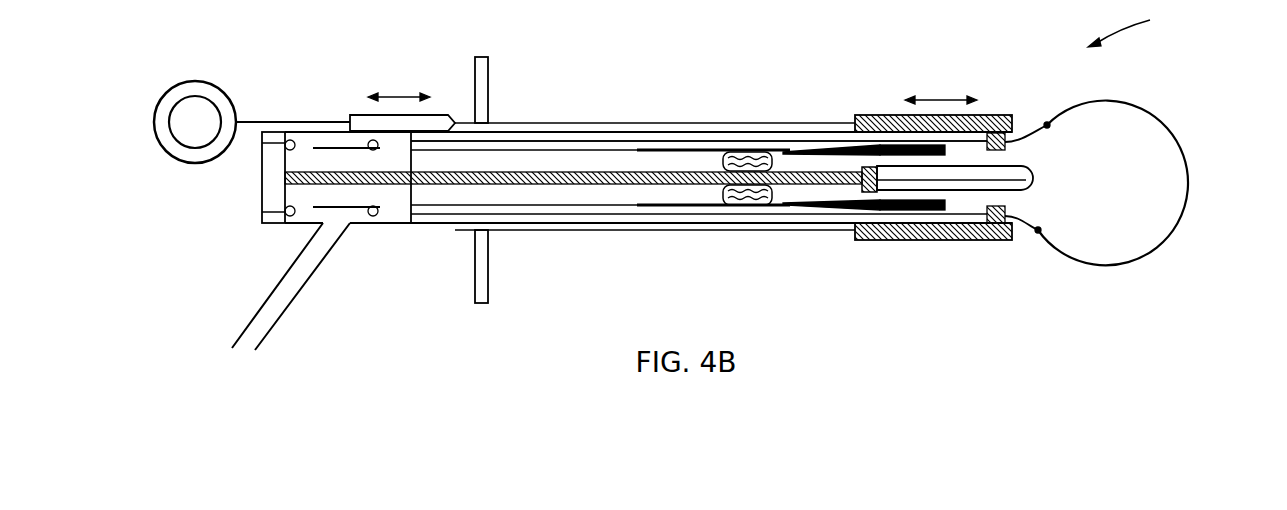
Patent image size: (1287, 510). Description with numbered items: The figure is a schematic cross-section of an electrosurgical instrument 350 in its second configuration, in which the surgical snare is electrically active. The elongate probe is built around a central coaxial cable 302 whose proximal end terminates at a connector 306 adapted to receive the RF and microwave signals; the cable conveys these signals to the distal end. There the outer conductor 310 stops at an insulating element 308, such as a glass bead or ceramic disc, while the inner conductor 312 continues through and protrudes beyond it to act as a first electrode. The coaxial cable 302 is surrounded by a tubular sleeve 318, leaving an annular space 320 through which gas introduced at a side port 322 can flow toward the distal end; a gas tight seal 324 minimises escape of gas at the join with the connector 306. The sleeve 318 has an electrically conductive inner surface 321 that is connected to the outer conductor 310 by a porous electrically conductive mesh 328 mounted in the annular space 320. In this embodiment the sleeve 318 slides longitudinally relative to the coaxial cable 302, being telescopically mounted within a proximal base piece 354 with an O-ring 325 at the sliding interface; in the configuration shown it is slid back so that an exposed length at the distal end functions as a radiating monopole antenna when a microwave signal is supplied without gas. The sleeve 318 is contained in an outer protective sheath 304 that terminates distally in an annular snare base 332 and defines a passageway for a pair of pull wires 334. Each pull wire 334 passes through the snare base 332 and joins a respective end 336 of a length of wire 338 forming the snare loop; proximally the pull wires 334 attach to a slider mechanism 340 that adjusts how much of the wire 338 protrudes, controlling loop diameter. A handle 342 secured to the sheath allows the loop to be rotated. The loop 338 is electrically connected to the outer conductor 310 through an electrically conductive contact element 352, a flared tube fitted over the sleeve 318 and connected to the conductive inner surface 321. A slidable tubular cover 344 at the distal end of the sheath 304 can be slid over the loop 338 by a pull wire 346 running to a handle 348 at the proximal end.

The coaxial cable 302 is at (572, 171).
The outer protective sheath 304 is at (515, 229).
The connector 306 is at (262, 178).
The insulating element 308 is at (872, 192).
The outer conductor 310 is at (802, 208).
The inner conductor 312 is at (975, 180).
The sleeve 318 is at (675, 207).
The annular space 320 is at (645, 149).
The electrically conductive inner surface 321 is at (786, 152).
The port 322 is at (250, 322).
The gas tight seal 324 is at (285, 222).
The O-ring 325 is at (372, 219).
The electrically conductive mesh 328 is at (740, 151).
The snare base 332 is at (1015, 220).
The pull wires 334 is at (503, 140).
The end of wire 336 is at (1050, 125).
The length of wire 338 is at (1189, 198).
The slider mechanism 340 is at (365, 114).
The handle 342 is at (476, 70).
The slidable tubular cover 344 is at (968, 116).
The pull wire 346 is at (617, 122).
The handle 348 is at (193, 81).
The electrosurgical instrument 350 is at (1138, 24).
The electrically conductive contact element 352 is at (828, 140).
The proximal base piece 354 is at (318, 147).